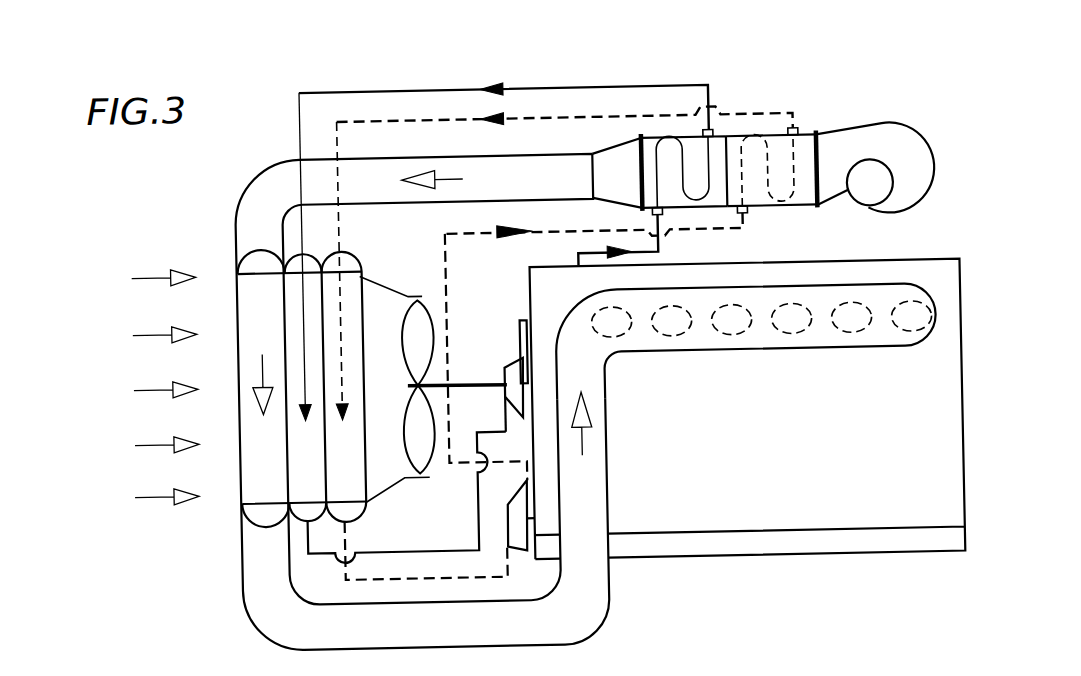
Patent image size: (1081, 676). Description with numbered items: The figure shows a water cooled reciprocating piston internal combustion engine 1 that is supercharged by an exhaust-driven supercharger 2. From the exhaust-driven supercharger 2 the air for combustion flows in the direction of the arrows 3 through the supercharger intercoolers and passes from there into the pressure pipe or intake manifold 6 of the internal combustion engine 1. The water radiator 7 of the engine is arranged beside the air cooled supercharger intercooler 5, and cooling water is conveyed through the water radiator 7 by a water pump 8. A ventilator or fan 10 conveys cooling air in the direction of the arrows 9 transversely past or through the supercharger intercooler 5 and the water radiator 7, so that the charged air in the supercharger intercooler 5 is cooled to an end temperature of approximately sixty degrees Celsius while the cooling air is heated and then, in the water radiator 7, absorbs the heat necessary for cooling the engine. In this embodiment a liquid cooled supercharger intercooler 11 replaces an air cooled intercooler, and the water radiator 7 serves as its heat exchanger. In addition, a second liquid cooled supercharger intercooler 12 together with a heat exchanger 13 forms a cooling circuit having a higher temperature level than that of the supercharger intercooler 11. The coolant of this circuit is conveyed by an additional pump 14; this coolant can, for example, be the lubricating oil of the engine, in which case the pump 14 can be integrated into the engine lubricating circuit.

The internal combustion engine 1 is at (940, 433).
The exhaust-driven supercharger 2 is at (911, 142).
The arrows 3 is at (428, 176).
The supercharger intercooler 5 is at (255, 322).
The pressure pipe or intake manifold 6 is at (903, 287).
The water radiator 7 is at (499, 321).
The water pump 8 is at (516, 398).
The arrows 9 is at (178, 261).
The ventilator or fan 10 is at (420, 313).
The liquid cooled supercharger intercooler 11 is at (681, 143).
The second liquid cooled supercharger intercooler 12 is at (802, 157).
The heat exchanger 13 is at (359, 271).
The additional pump 14 is at (511, 526).